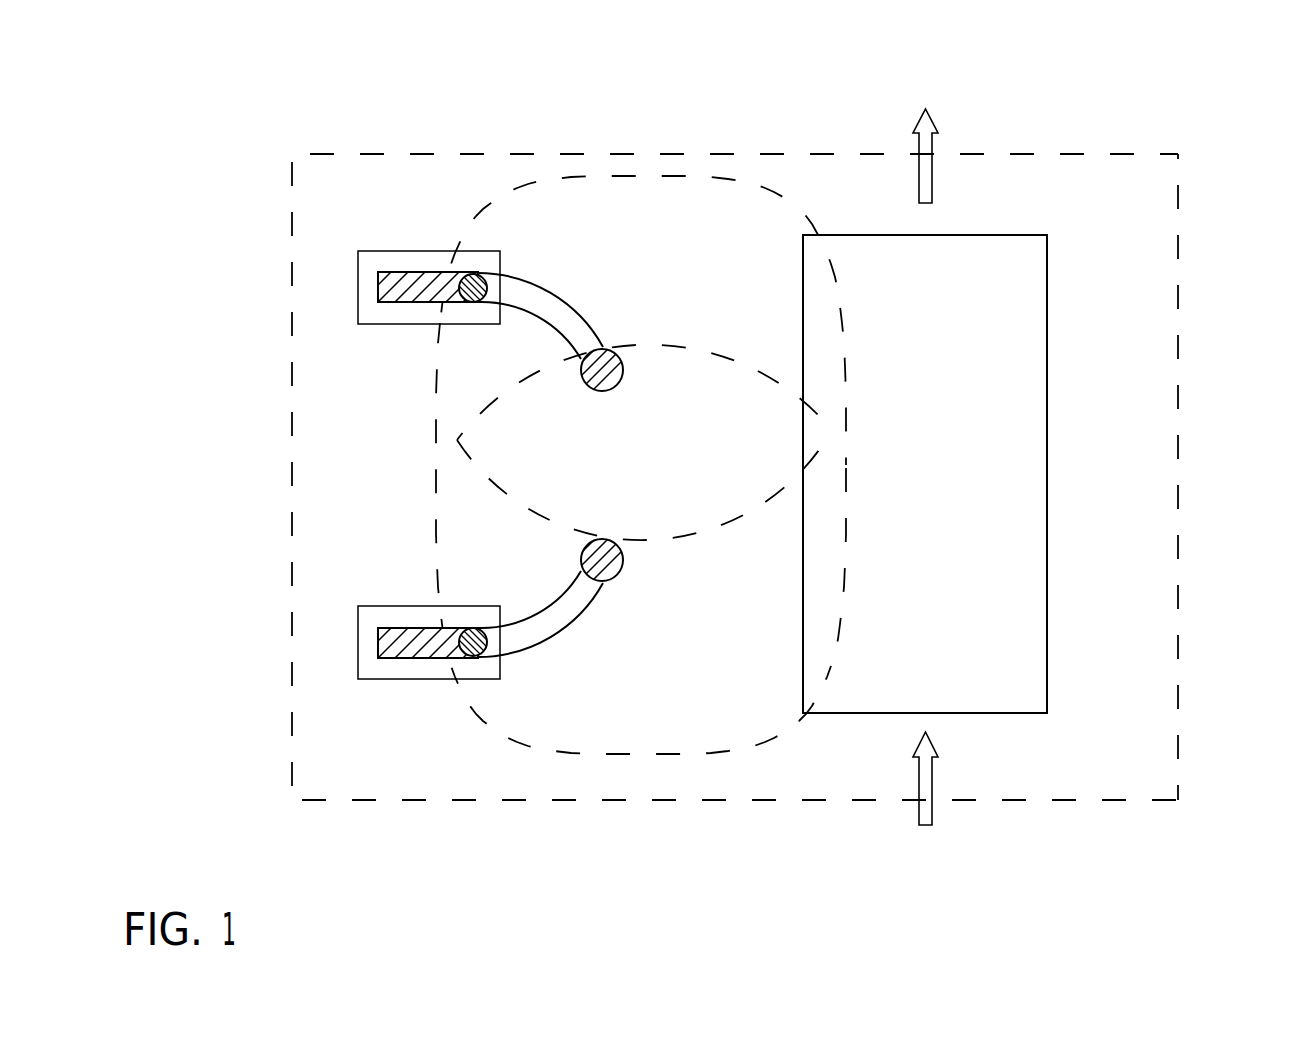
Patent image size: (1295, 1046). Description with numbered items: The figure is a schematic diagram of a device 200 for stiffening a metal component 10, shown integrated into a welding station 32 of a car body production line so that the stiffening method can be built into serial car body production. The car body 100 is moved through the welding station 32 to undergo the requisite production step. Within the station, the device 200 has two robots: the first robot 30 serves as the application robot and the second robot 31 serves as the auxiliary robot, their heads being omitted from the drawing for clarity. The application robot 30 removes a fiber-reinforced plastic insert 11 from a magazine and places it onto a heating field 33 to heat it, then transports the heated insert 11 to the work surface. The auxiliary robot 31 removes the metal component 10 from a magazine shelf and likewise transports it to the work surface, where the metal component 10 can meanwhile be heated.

The metal component 10 is at (393, 288).
The fiber-reinforced plastic insert 11 is at (393, 642).
The application robot 30 is at (556, 621).
The auxiliary robot 31 is at (556, 308).
The welding station 32 is at (369, 800).
The heating field 33 is at (425, 667).
The car body 100 is at (1047, 476).
The device for stiffening a metal component 200 is at (290, 476).